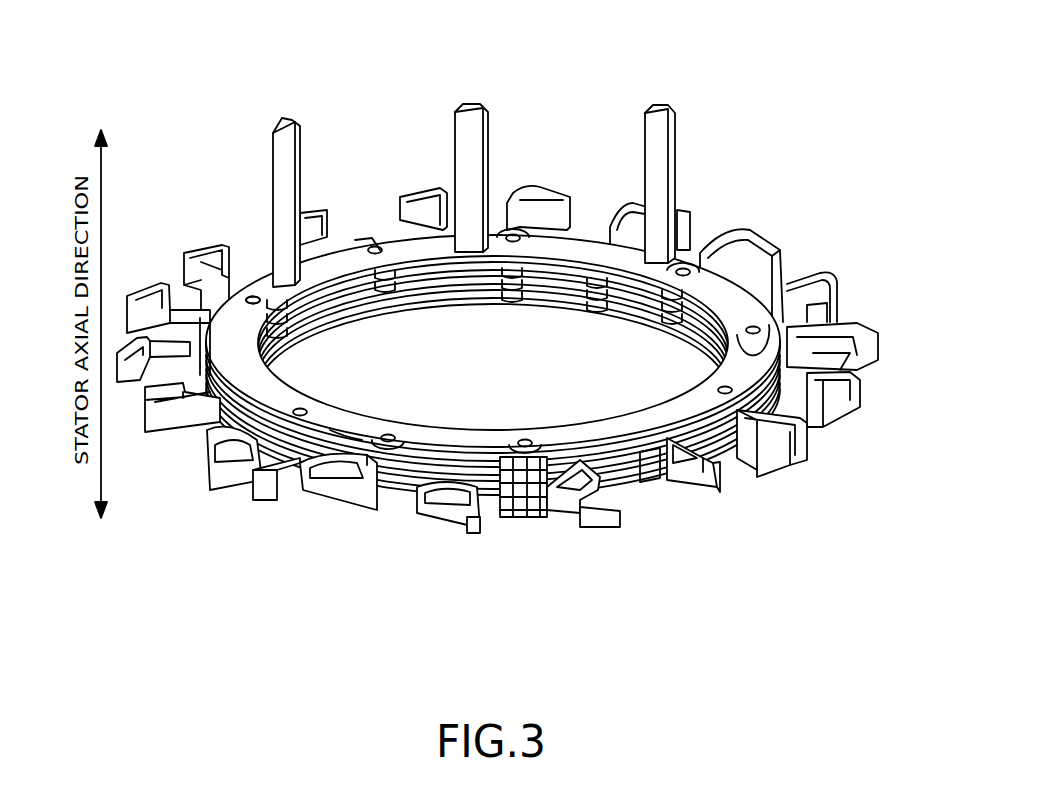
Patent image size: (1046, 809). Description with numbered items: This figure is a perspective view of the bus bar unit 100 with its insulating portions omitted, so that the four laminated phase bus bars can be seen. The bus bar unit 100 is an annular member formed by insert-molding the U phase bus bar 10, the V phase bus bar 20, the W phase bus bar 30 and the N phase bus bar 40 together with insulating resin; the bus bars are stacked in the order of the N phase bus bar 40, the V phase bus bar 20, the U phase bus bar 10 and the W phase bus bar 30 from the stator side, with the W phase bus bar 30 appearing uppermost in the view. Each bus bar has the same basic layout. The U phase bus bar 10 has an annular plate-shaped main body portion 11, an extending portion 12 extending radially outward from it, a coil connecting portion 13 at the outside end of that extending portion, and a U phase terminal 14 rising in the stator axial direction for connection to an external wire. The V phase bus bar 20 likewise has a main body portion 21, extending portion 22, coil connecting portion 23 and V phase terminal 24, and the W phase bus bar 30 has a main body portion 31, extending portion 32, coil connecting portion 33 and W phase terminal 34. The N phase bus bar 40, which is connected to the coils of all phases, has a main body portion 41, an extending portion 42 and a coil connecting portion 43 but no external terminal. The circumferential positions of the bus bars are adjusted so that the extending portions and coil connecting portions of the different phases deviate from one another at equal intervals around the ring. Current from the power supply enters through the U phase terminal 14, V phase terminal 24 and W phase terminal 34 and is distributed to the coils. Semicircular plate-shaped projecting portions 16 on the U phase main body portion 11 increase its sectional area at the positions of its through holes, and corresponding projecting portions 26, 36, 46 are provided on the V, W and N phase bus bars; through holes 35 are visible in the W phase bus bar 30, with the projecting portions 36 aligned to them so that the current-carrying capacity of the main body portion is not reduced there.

The bus bar unit 100 is at (722, 73).
The U phase bus bar 10 is at (562, 272).
The main body portion 11 is at (330, 460).
The extending portion 12 is at (268, 483).
The coil connecting portion 13 is at (225, 470).
The U phase terminal 14 is at (656, 110).
The projecting portions 16 is at (385, 285).
The V phase bus bar 20 is at (438, 292).
The main body portion 21 is at (630, 467).
The extending portion 22 is at (678, 460).
The coil connecting portion 23 is at (712, 487).
The V phase terminal 24 is at (290, 128).
The projecting portions 26 is at (510, 292).
The W phase bus bar 30 is at (367, 428).
The main body portion 31 is at (343, 427).
The extending portion 32 is at (472, 522).
The coil connecting portion 33 is at (447, 515).
The W phase terminal 34 is at (473, 108).
The through holes 35 is at (253, 296).
The projecting portions 36 is at (390, 257).
The N phase bus bar 40 is at (690, 352).
The main body portion 41 is at (530, 510).
The extending portion 42 is at (603, 520).
The coil connecting portion 43 is at (163, 425).
The projecting portions 46 is at (595, 320).